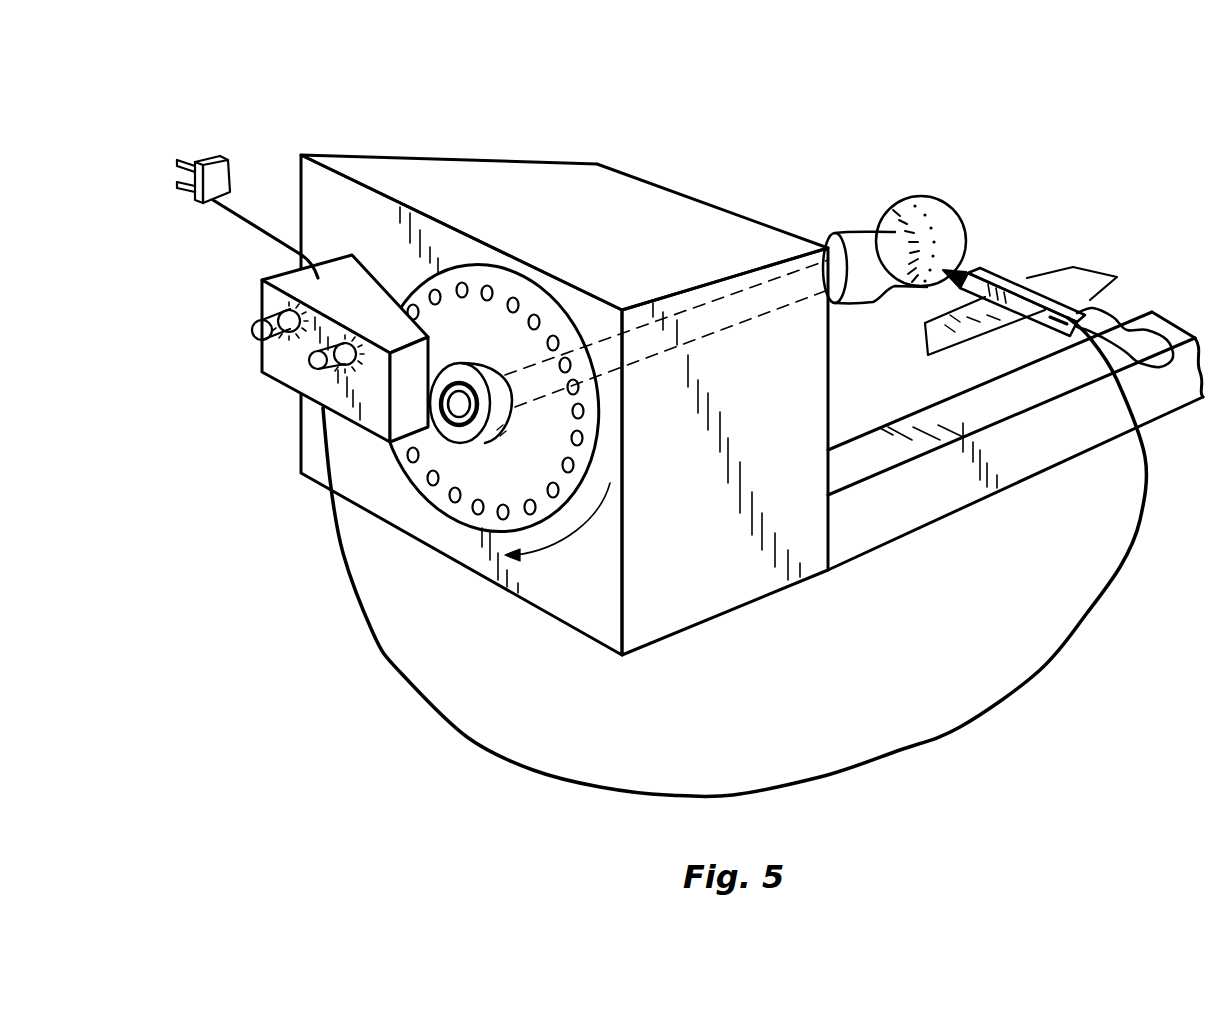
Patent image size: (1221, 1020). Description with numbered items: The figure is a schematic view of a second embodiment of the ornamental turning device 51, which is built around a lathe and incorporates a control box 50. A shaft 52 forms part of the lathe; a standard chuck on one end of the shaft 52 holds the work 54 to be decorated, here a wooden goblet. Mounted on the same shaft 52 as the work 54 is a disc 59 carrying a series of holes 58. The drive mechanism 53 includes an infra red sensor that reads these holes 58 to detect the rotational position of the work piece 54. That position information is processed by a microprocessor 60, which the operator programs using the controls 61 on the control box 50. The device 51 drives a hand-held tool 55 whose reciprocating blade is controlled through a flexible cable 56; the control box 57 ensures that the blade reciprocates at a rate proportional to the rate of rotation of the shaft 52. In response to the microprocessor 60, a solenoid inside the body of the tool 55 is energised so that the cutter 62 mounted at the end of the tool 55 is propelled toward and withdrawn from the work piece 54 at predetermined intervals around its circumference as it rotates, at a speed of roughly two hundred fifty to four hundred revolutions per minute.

The control box 50 is at (722, 577).
The ornamental turning device 51 is at (626, 158).
The shaft 52 is at (838, 250).
The drive mechanism 53 is at (585, 612).
The work 54 is at (940, 205).
The tool 55 is at (1007, 287).
The flexible cable 56 is at (1040, 670).
The control box 57 is at (473, 550).
The holes 58 is at (432, 477).
The disc 59 is at (437, 498).
The microprocessor 60 is at (270, 298).
The controls 61 is at (317, 360).
The cutter 62 is at (967, 262).